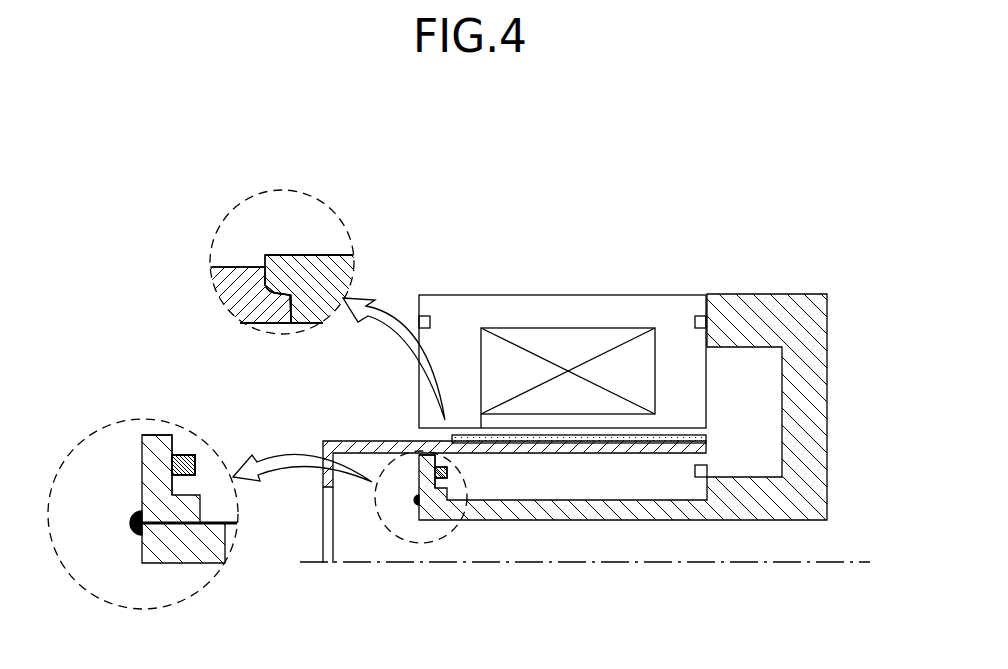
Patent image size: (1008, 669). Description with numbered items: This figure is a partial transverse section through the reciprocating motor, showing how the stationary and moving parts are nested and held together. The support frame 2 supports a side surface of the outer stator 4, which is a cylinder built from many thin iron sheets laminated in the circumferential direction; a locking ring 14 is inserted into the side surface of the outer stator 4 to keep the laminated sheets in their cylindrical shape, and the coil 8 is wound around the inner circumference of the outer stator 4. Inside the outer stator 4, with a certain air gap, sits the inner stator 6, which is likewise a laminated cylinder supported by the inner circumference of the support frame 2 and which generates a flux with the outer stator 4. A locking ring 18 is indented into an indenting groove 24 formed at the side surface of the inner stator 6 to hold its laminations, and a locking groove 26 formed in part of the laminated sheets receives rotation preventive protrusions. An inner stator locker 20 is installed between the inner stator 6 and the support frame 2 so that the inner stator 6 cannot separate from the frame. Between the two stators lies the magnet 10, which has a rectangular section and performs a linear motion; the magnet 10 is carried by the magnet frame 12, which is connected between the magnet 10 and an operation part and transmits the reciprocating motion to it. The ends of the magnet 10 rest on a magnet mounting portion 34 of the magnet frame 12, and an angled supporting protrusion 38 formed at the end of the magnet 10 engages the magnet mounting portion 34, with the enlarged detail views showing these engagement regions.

The support frame 2 is at (828, 331).
The outer stator 4 is at (457, 310).
The inner stator 6 is at (587, 470).
The coil 8 is at (548, 340).
The magnet 10 is at (640, 440).
The magnet frame 12 is at (352, 442).
The locking ring 14 is at (426, 316).
The locking ring 18 is at (181, 455).
The inner stator locker 20 is at (419, 472).
The indenting groove 24 is at (186, 457).
The locking groove 26 is at (220, 526).
The magnet mounting portion 34 is at (275, 296).
The supporting protrusion 38 is at (289, 265).